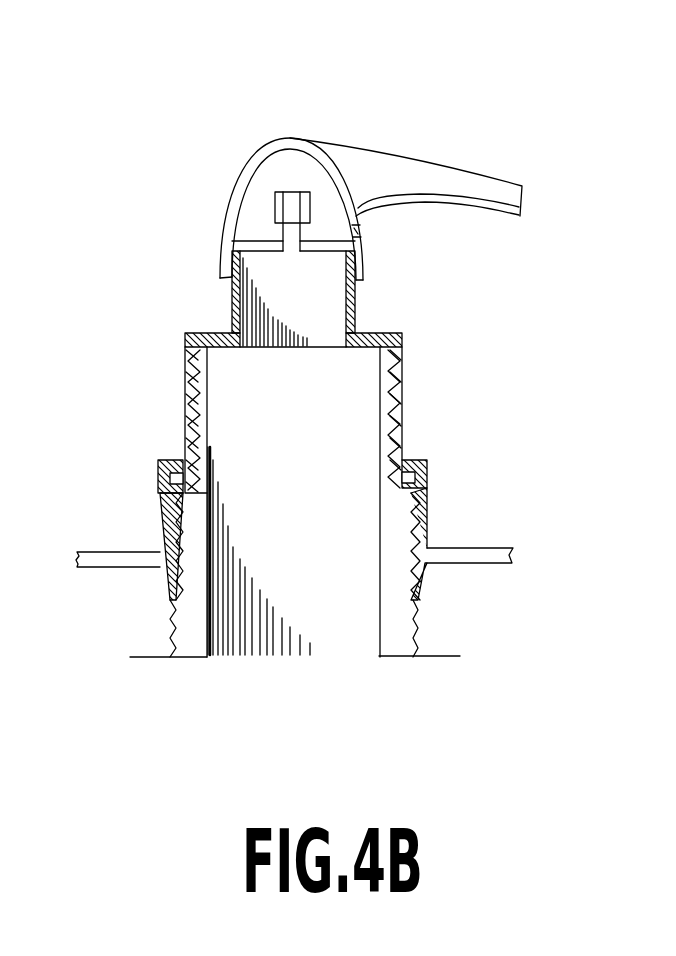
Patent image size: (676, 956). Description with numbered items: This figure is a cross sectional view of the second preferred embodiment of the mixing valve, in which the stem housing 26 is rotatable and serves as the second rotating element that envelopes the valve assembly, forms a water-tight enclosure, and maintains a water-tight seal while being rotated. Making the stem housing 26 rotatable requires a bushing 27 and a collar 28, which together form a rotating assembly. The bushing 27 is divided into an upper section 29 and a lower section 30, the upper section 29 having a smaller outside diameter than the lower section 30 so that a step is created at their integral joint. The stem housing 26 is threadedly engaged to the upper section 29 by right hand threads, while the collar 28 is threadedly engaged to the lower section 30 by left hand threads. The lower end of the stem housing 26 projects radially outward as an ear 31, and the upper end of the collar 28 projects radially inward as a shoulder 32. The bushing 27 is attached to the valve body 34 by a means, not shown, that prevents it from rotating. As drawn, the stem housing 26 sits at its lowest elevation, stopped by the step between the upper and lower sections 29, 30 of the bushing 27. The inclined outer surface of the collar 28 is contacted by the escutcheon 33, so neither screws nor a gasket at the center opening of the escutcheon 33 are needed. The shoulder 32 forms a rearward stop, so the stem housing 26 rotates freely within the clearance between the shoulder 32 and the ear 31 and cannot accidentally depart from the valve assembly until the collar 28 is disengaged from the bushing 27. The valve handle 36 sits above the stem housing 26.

The valve handle 36 is at (290, 138).
The upper section of bushing 29 is at (402, 357).
The stem housing 26 is at (403, 415).
The shoulder 32 is at (405, 460).
The collar 28 is at (427, 488).
The ear 31 is at (425, 506).
The escutcheon 33 is at (513, 548).
The bushing 27 is at (397, 565).
The lower section of bushing 30 is at (417, 617).
The valve body 34 is at (290, 552).